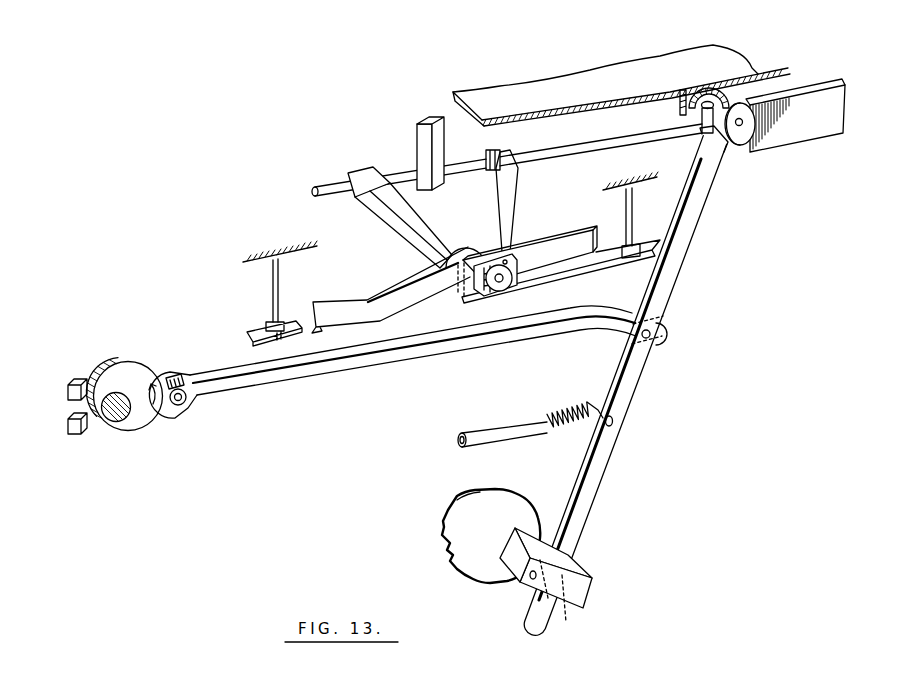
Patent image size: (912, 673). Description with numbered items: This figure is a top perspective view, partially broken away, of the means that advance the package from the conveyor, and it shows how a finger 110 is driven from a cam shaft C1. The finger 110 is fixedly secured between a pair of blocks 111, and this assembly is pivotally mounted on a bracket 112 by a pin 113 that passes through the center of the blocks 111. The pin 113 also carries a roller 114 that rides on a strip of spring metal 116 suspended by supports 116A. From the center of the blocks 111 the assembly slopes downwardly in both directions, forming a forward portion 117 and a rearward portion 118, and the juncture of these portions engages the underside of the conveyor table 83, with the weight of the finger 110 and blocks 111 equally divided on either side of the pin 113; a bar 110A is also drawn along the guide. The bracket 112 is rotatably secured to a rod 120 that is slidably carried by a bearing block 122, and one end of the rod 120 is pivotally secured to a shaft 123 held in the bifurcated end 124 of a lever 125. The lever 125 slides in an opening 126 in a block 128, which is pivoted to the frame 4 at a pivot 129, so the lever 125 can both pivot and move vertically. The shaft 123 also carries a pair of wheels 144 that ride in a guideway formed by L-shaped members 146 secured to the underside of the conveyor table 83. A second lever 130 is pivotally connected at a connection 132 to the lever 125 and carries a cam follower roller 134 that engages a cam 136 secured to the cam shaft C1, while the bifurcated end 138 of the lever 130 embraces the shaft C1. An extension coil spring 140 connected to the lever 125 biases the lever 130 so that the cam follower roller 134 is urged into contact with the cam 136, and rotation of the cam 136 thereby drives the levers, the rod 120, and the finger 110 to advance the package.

The frame 4 is at (443, 547).
The conveyor table 83 is at (603, 78).
The finger 110 is at (560, 264).
The guide bar extension 110A is at (325, 310).
The blocks 111 is at (480, 251).
The bracket 112 is at (516, 189).
The pin 113 is at (497, 288).
The roller 114 is at (488, 260).
The strip of spring metal 116 is at (532, 281).
The supports 116A is at (280, 289).
The forward sloping portion 117 is at (428, 252).
The rearward sloping portion 118 is at (496, 250).
The rod 120 is at (535, 150).
The bearing block 122 is at (418, 136).
The shaft 123 is at (740, 130).
The bifurcated end 124 is at (703, 90).
The lever 125 is at (677, 260).
The opening 126 is at (558, 590).
The block 128 is at (573, 566).
The pivot 129 is at (530, 578).
The lever 130 is at (412, 354).
The pivotal connection 132 is at (650, 341).
The cam follower roller 134 is at (178, 378).
The cam 136 is at (137, 376).
The bifurcated end 138 is at (82, 383).
The extension coil spring 140 is at (531, 424).
The wheels 144 is at (691, 84).
The L-shaped members 146 is at (772, 71).
The cam shaft C1 is at (119, 421).